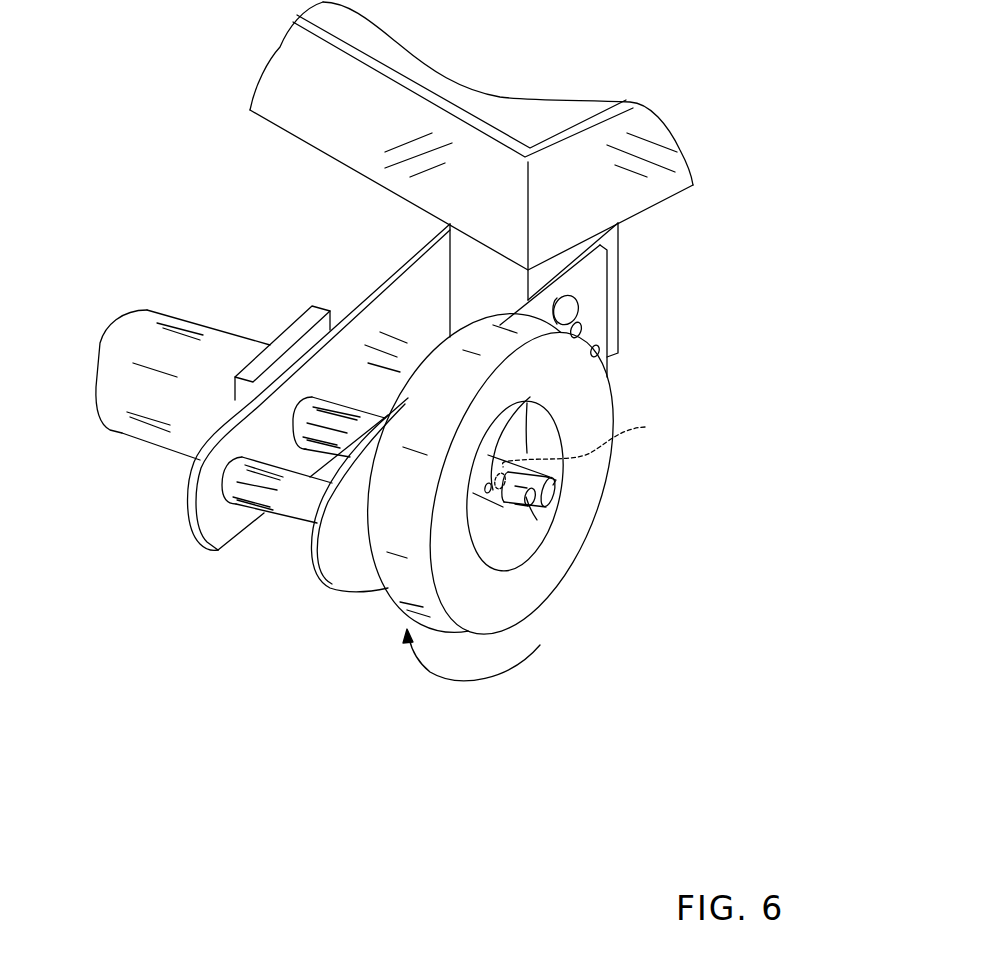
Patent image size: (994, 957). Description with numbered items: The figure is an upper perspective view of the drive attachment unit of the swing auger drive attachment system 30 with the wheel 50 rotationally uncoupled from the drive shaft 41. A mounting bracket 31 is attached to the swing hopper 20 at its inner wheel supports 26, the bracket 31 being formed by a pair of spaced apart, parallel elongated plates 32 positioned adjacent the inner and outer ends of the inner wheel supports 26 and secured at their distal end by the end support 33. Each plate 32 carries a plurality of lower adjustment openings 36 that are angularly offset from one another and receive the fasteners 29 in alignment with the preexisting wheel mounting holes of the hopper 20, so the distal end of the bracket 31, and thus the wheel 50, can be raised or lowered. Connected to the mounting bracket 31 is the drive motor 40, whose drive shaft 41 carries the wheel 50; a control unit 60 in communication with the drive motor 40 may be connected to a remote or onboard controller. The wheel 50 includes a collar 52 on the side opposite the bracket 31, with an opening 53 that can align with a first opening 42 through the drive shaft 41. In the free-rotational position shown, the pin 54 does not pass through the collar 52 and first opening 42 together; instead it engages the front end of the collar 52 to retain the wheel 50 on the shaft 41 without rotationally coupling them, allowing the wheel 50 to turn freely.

The swing hopper 20 is at (283, 130).
The inner wheel supports 26 is at (618, 237).
The fasteners 29 is at (577, 297).
The wheel assembly 30 is at (244, 743).
The mounting bracket 31 is at (186, 530).
The elongated plates 32 is at (373, 286).
The end support 33 is at (285, 520).
The lower adjustment openings 36 is at (578, 330).
The drive motor 40 is at (117, 333).
The drive shaft 41 is at (550, 493).
The first opening 42 is at (620, 506).
The wheel 50 is at (520, 617).
The collar 52 is at (567, 427).
The opening 53 is at (500, 520).
The pin 54 is at (533, 513).
The control unit 60 is at (292, 328).